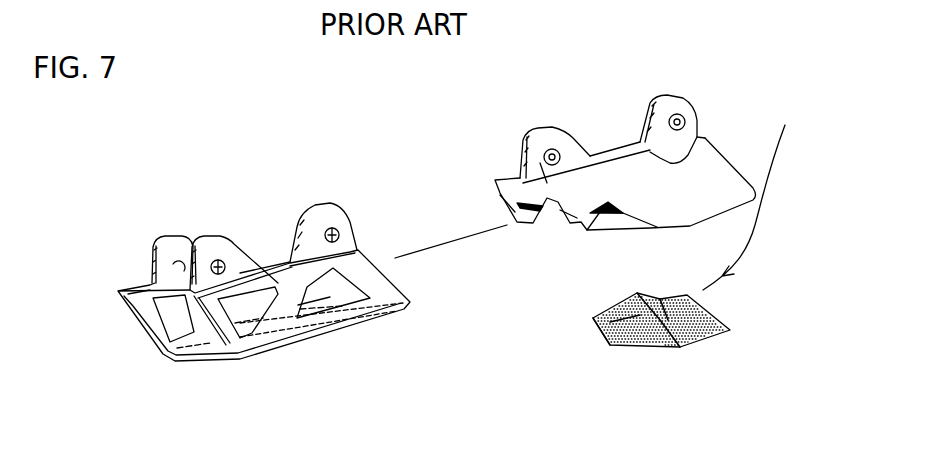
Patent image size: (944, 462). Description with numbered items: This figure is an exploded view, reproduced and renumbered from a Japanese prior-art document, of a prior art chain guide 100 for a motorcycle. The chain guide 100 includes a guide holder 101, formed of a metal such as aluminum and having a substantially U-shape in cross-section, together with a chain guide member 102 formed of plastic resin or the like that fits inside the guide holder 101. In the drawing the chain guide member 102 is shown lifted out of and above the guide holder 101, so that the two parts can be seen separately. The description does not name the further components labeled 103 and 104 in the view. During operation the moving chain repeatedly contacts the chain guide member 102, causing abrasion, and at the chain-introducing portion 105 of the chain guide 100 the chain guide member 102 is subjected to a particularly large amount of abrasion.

The chain guide 100 is at (787, 198).
The guide holder 101 is at (236, 214).
The chain guide member 102 is at (744, 147).
The lug of upper bracket 103 is at (639, 118).
The block member 104 is at (672, 364).
The chain-introducing portion 105 is at (121, 342).